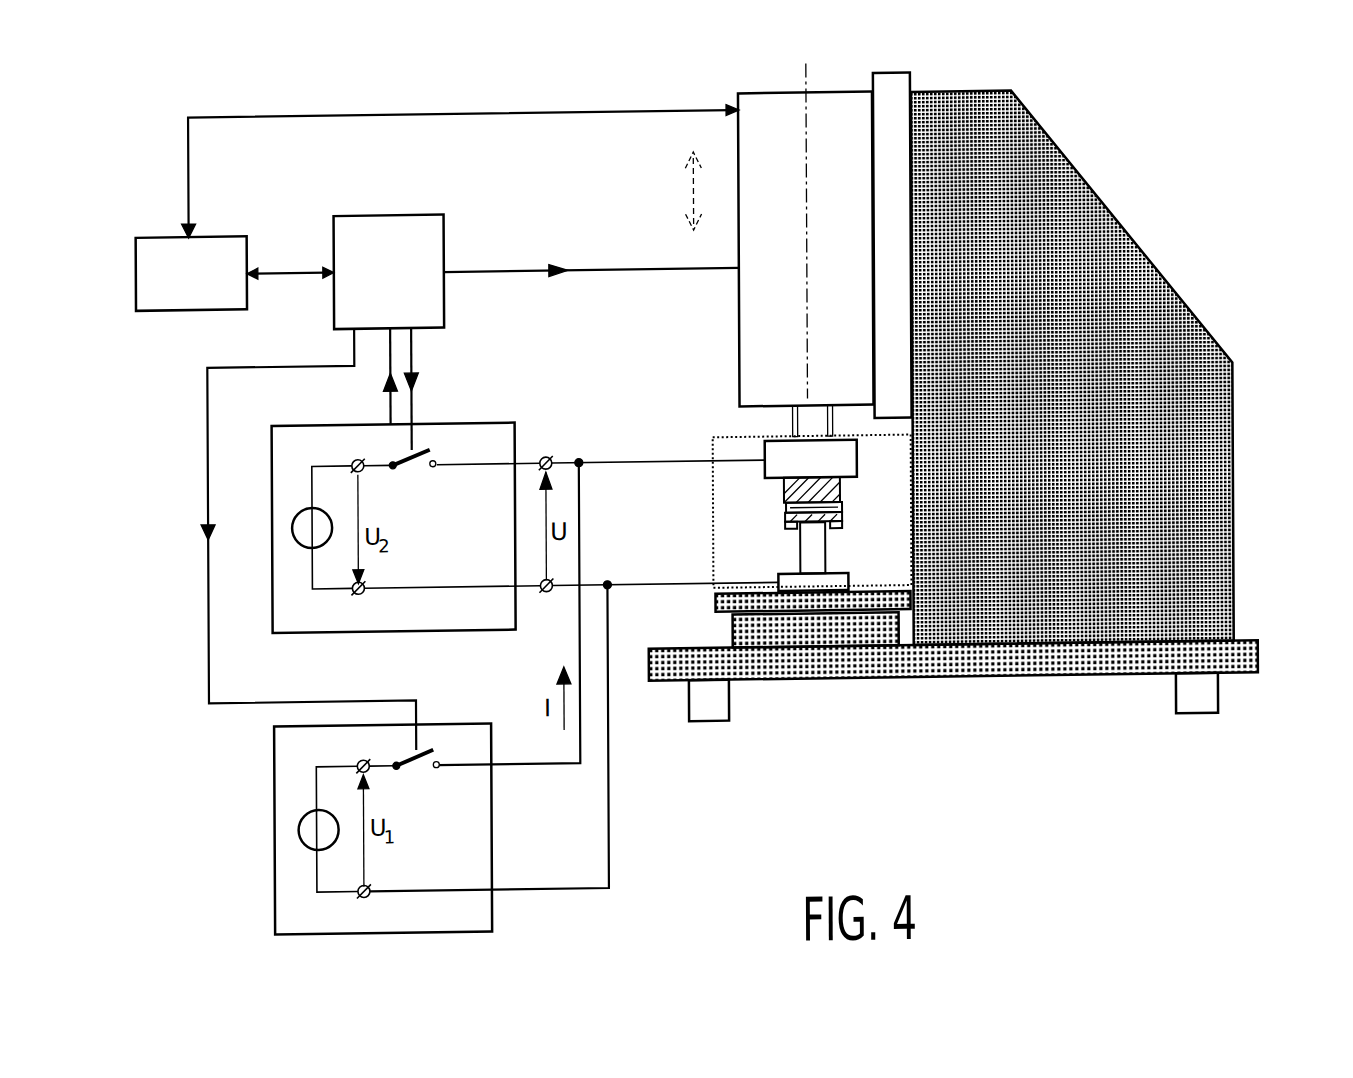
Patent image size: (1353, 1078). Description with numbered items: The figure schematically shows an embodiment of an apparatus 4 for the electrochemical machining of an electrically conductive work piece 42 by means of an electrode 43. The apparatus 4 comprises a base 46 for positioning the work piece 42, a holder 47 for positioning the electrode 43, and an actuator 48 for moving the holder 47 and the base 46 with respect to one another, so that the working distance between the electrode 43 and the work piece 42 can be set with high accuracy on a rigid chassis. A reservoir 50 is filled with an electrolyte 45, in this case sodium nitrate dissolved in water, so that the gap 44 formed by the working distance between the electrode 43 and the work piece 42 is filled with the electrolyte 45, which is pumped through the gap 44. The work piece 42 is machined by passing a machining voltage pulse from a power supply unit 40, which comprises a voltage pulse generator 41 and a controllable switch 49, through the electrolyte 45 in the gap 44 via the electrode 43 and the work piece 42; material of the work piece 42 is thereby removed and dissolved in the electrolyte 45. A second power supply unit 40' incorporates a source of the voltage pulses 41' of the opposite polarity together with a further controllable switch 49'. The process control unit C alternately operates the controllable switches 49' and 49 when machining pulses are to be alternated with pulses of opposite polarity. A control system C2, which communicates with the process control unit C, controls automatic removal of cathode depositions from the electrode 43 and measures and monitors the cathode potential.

The apparatus 4 is at (1298, 458).
The power supply unit 40 is at (344, 829).
The second power supply unit 40' is at (393, 490).
The voltage pulse generator 41 is at (276, 830).
The source of the voltage pulses 41' is at (284, 561).
The work piece 42 is at (785, 524).
The electrode 43 is at (784, 497).
The gap 44 is at (842, 508).
The electrolyte 45 is at (752, 578).
The base 46 is at (826, 556).
The holder 47 is at (765, 453).
The actuator 48 is at (752, 340).
The controllable switch 49 is at (428, 720).
The controllable switch 49' is at (423, 420).
The reservoir 50 is at (713, 498).
The process control unit C is at (388, 211).
The control system C2 is at (155, 230).